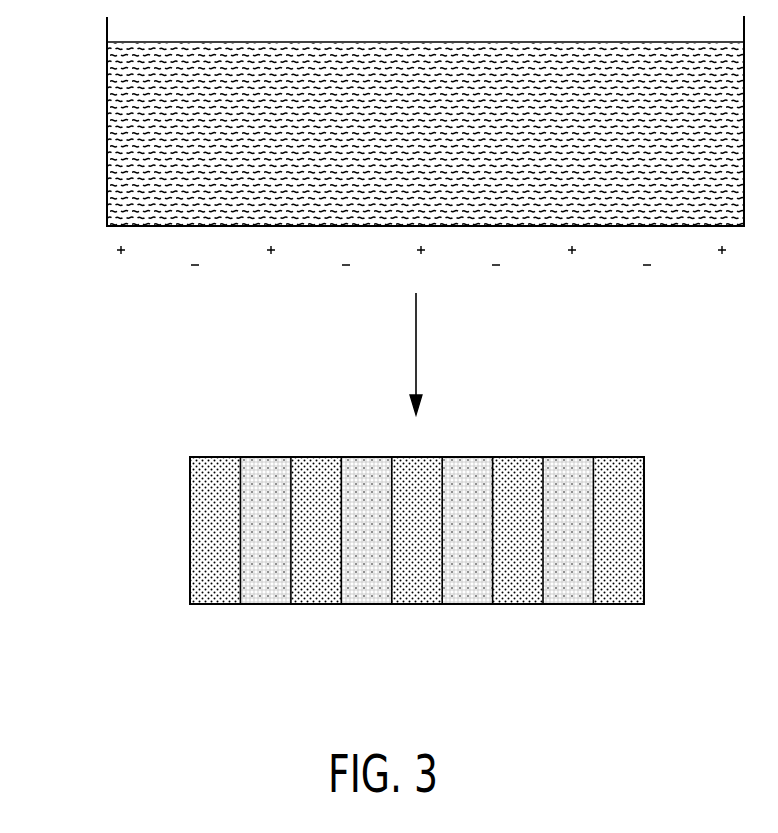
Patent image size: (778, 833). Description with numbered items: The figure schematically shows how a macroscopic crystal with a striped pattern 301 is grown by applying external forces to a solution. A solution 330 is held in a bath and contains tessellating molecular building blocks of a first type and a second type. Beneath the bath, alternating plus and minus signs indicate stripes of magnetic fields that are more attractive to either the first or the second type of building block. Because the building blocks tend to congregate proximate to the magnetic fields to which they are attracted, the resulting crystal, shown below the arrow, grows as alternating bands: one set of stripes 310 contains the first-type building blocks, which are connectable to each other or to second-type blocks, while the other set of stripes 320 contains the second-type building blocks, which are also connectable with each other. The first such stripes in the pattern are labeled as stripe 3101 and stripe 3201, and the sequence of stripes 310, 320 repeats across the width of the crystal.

The solution 330 is at (172, 107).
The striped pattern 301 is at (380, 523).
The set of stripes 310 is at (417, 535).
The other set of stripes 320 is at (416, 535).
The stripe 3101 is at (309, 499).
The stripe 3201 is at (362, 499).